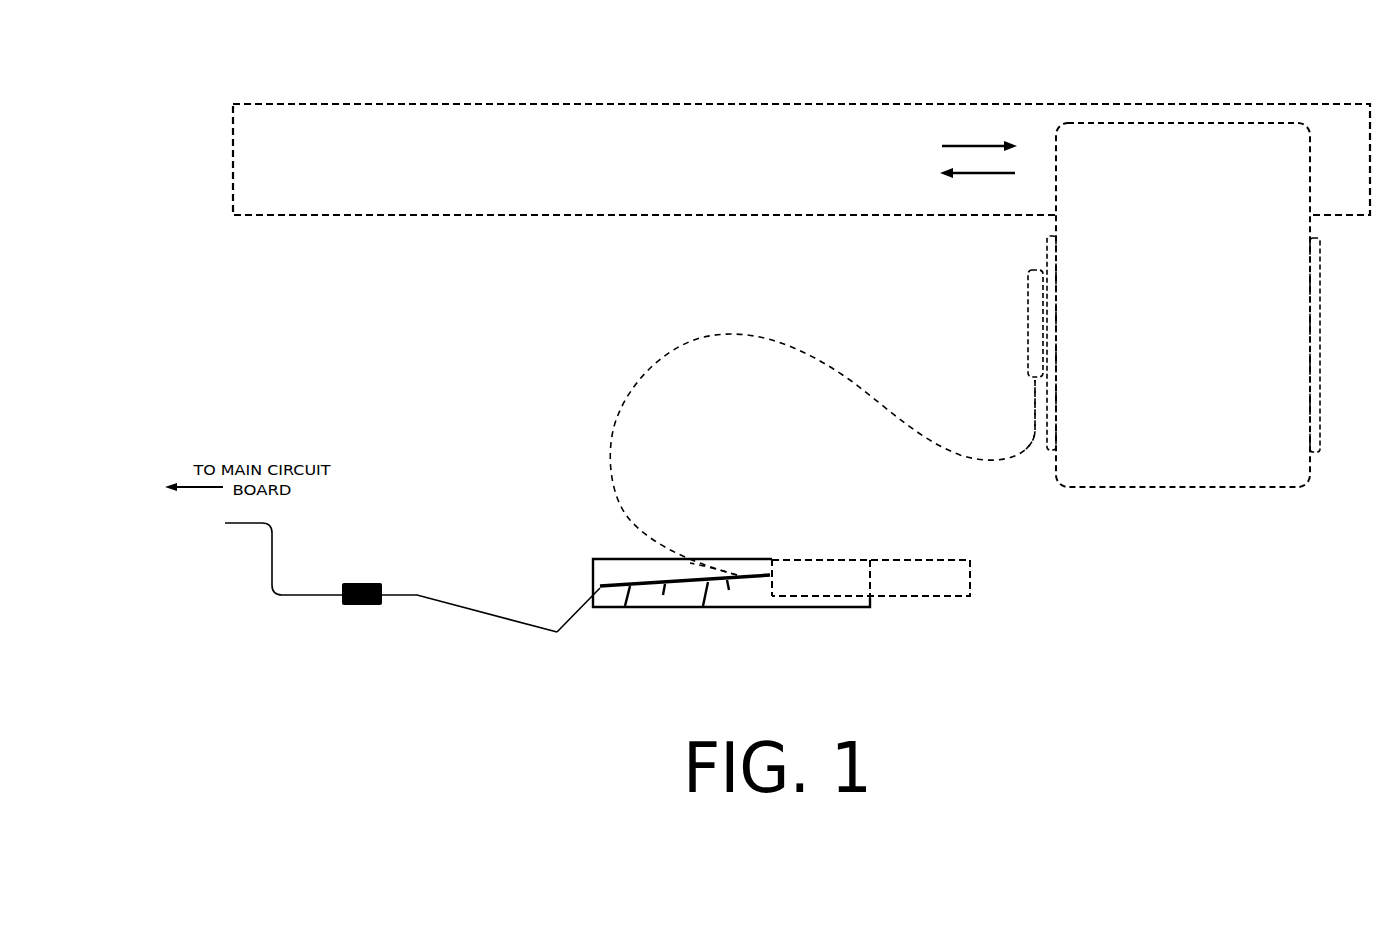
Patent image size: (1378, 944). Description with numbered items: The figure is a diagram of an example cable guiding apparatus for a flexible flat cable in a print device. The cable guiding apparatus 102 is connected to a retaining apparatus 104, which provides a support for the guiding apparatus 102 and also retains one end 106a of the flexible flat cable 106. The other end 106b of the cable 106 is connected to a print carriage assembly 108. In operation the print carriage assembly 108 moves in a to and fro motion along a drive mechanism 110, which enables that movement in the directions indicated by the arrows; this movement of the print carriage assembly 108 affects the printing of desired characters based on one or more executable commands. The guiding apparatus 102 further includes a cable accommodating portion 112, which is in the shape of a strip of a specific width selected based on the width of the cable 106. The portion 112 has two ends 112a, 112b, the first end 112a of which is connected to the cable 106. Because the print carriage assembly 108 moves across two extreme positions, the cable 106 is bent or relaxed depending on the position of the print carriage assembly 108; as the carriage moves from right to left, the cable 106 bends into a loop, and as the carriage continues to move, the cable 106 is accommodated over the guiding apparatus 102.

The cable guiding apparatus 102 is at (628, 637).
The retaining apparatus 104 is at (975, 582).
The flexible flat cable 106 is at (648, 373).
The end of the flexible flat cable 106a is at (741, 559).
The other end of the cable 106b is at (1008, 379).
The print carriage assembly 108 is at (1174, 305).
The drive mechanism 110 is at (420, 217).
The cable accommodating portion 112 is at (582, 610).
The first end of the cable accommodating portion 112a is at (571, 524).
The second end of the cable accommodating portion 112b is at (234, 558).